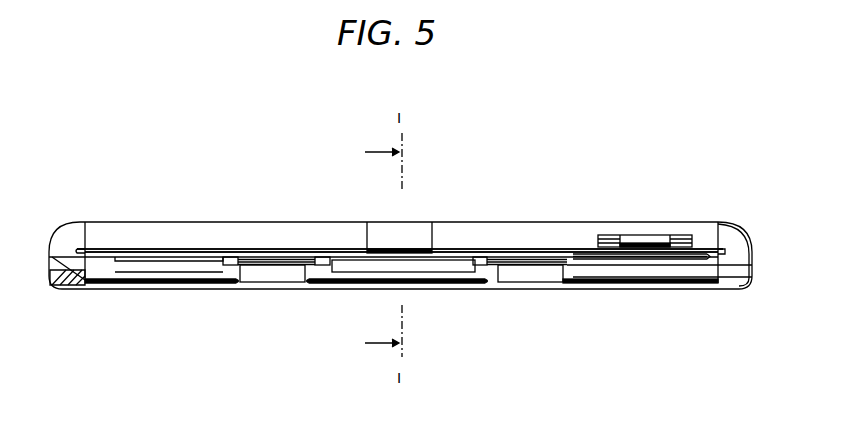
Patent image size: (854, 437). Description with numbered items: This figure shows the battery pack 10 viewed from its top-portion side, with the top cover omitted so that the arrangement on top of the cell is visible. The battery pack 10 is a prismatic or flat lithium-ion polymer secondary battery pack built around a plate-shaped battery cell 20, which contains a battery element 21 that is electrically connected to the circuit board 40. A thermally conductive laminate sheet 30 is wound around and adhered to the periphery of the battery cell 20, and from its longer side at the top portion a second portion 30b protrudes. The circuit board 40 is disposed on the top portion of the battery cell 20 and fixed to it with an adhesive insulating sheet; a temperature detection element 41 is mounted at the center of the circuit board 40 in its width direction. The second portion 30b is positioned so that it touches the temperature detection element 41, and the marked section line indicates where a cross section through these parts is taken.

The battery pack 10 is at (754, 341).
The battery cell 20 is at (282, 237).
The battery element 21 is at (400, 250).
The thermally conductive laminate sheet 30 is at (517, 223).
The second portion 30b is at (422, 237).
The circuit board 40 is at (183, 249).
The temperature detection element 41 is at (382, 250).